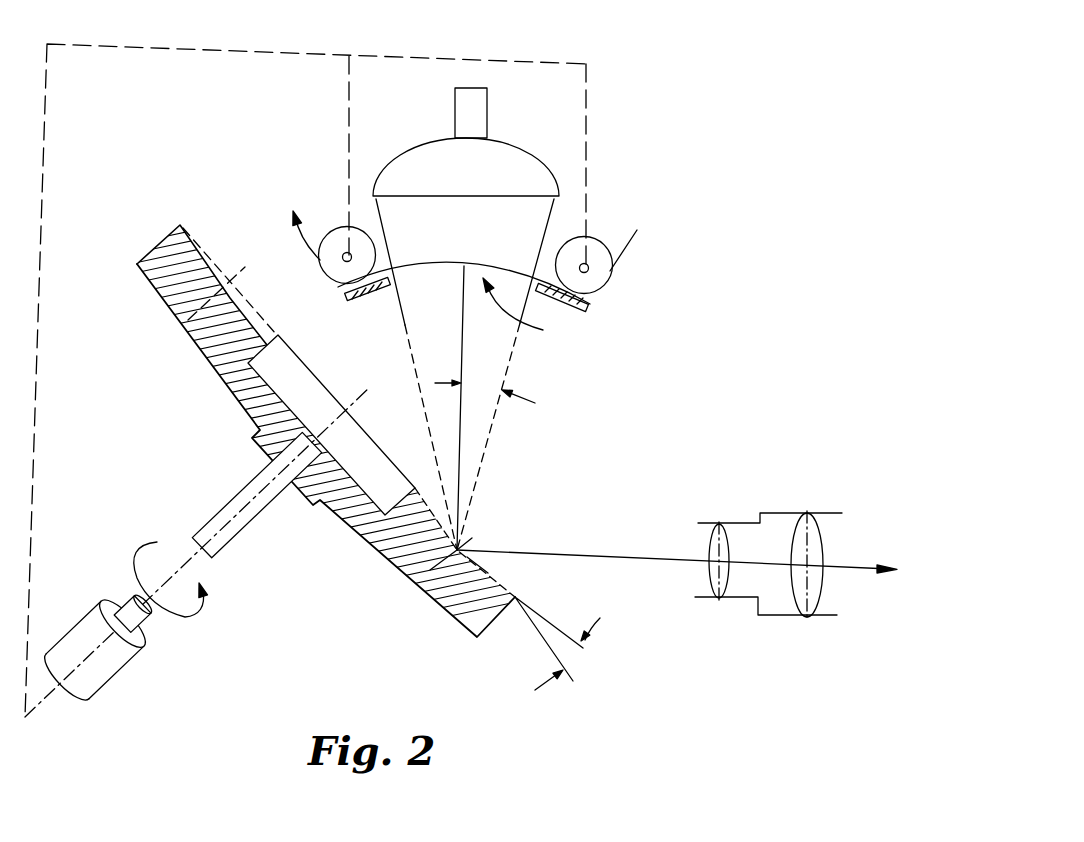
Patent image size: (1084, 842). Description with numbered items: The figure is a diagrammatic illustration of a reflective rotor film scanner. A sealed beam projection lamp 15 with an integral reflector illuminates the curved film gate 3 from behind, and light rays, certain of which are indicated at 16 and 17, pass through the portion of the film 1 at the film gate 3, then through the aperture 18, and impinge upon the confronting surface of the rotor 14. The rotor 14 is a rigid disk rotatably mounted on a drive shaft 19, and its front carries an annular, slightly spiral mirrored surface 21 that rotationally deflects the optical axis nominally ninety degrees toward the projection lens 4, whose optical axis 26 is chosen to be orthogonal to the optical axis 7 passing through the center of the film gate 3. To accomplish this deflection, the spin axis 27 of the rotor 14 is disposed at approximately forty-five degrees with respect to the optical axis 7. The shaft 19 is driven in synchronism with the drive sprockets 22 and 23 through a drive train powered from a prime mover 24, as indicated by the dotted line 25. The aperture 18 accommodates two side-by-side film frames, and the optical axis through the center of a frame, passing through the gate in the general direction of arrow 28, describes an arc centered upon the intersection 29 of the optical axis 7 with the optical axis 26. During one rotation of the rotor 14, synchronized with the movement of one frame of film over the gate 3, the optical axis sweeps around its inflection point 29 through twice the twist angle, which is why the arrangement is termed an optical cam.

The film 1 is at (637, 230).
The curved film gate 3 is at (600, 308).
The projection lens 4 is at (787, 512).
The optical axis 7 is at (462, 452).
The rotor 14 is at (207, 360).
The sealed beam projection lamp 15 is at (503, 142).
The light ray 16 is at (518, 340).
The light ray 17 is at (403, 328).
The aperture 18 is at (530, 308).
The drive shaft 19 is at (230, 500).
The annular mirrored surface 21 is at (488, 573).
The drive sprocket 22 is at (602, 240).
The drive sprocket 23 is at (347, 228).
The prime mover 24 is at (125, 663).
The dotted line 25 is at (37, 482).
The optical axis of projection lens 26 is at (588, 558).
The spin axis 27 is at (361, 397).
The arrow 28 is at (300, 240).
The intersection 29 is at (472, 538).